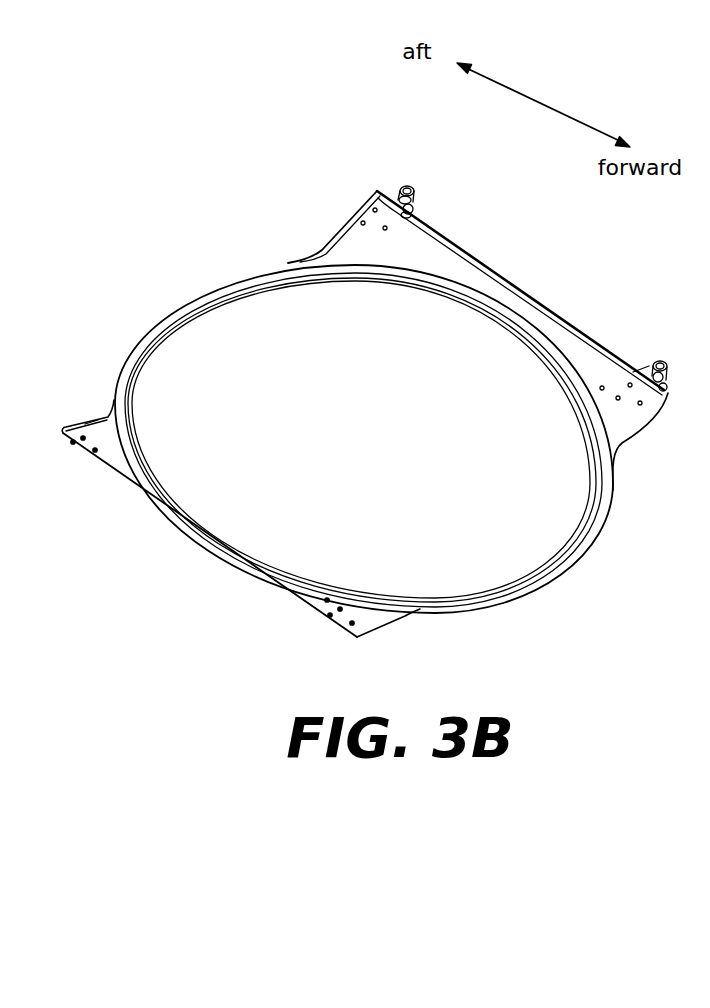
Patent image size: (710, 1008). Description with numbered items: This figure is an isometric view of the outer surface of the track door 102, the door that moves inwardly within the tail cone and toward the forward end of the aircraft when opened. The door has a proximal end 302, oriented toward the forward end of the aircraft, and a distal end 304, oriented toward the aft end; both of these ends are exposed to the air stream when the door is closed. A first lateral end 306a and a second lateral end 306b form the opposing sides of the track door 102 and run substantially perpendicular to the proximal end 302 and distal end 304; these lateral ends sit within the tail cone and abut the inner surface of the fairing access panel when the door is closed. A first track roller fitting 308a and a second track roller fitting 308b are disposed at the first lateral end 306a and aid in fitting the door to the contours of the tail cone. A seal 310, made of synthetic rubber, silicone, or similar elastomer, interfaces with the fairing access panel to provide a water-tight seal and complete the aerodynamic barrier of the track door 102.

The track door 102 is at (283, 218).
The proximal end 302 is at (550, 587).
The distal end 304 is at (190, 310).
The first lateral end 306a is at (496, 263).
The second lateral end 306b is at (243, 550).
The first track roller fitting 308a is at (393, 185).
The second track roller fitting 308b is at (659, 354).
The seal 310 is at (127, 457).